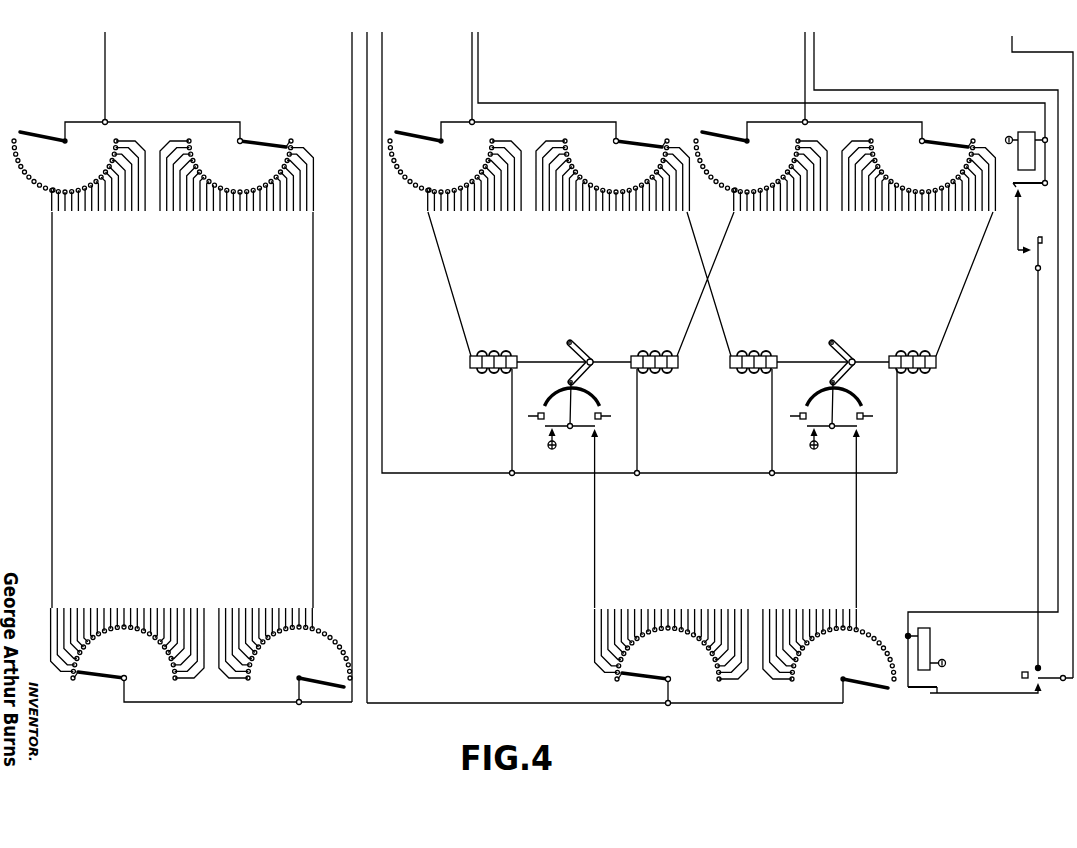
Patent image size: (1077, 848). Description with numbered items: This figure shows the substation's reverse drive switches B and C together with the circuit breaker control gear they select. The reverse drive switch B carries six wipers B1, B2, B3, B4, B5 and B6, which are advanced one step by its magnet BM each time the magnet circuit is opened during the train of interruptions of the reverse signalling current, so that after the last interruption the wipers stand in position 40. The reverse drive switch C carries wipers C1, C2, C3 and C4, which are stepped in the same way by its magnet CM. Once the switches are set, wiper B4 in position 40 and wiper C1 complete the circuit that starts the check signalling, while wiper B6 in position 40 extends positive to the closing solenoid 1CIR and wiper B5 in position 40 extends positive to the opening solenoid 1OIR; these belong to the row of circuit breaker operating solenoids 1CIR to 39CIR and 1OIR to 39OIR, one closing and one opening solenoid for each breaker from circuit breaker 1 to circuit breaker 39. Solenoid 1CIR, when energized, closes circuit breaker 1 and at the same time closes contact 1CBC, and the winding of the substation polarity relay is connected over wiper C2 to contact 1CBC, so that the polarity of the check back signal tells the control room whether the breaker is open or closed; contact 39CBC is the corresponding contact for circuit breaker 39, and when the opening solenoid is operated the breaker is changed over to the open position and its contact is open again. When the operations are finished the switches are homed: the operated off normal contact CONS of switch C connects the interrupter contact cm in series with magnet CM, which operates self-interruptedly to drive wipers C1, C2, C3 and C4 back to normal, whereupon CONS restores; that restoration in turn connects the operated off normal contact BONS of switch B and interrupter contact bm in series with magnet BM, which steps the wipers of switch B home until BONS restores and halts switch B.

The contact bank B1 is at (236, 175).
The contact bank B2 is at (918, 175).
The contact bank B3 is at (612, 175).
The wiper of reverse drive switch B B4 is at (78, 171).
The wiper of reverse drive switch B B5 is at (760, 171).
The wiper of reverse drive switch B B6 is at (454, 171).
The wiper of reverse drive switch C C1 is at (127, 644).
The wiper of reverse drive switch C C2 is at (671, 645).
The contact bank C3 is at (829, 648).
The contact bank C4 is at (285, 647).
The switch position 40 is at (402, 182).
The circuit breaker operating solenoid 1CIR is at (500, 370).
The open solenoid 1OIR is at (640, 370).
The circuit breaker operating solenoid 39CIR is at (768, 370).
The circuit breaker operating solenoid 39OIR is at (908, 370).
The circuit breaker 1 is at (596, 382).
The switch 39 is at (856, 382).
The circuit breaker contact 1CBC is at (581, 430).
The contact 39CBC is at (843, 430).
The magnet of reverse drive switch B BM is at (1029, 132).
The interrupter contact bm is at (1030, 217).
The off normal contact of switch B BONS is at (1036, 267).
The magnet of reverse drive switch C CM is at (930, 629).
The interrupter contact cm is at (920, 692).
The off normal contact of switch C CONS is at (1022, 674).